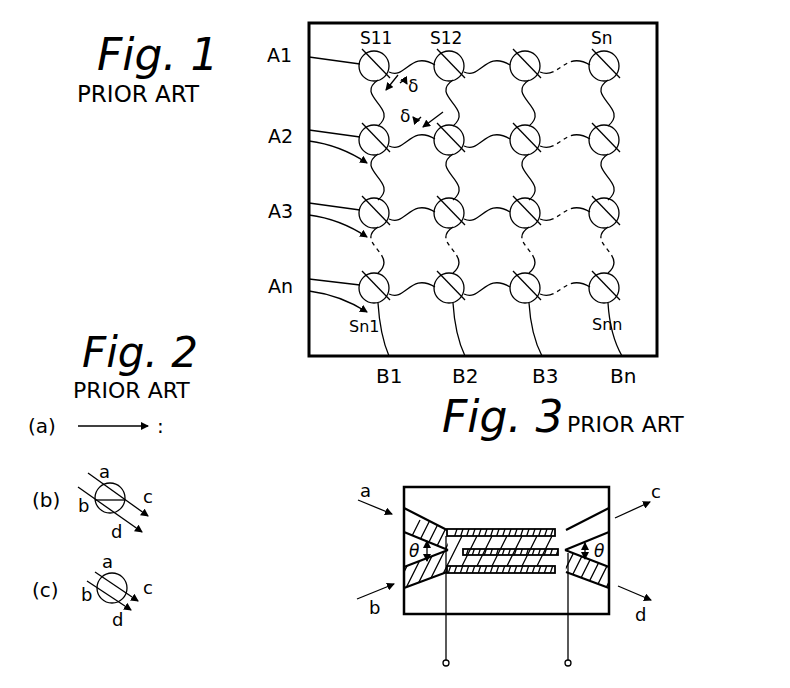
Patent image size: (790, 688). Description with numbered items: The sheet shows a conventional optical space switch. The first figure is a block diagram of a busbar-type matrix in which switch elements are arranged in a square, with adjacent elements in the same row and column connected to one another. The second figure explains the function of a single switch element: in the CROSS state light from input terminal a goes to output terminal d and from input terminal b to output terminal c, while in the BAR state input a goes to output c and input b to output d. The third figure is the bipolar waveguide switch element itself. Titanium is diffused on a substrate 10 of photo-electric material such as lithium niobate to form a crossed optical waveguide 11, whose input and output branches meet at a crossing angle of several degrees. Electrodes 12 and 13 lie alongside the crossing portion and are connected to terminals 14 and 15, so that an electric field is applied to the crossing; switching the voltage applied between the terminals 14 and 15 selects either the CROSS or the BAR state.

The substrate 10 is at (546, 486).
The crossed optical waveguide 11 is at (424, 526).
The electrode 12 is at (493, 530).
The electrode 13 is at (562, 528).
The terminal 14 is at (449, 664).
The terminal 15 is at (571, 664).